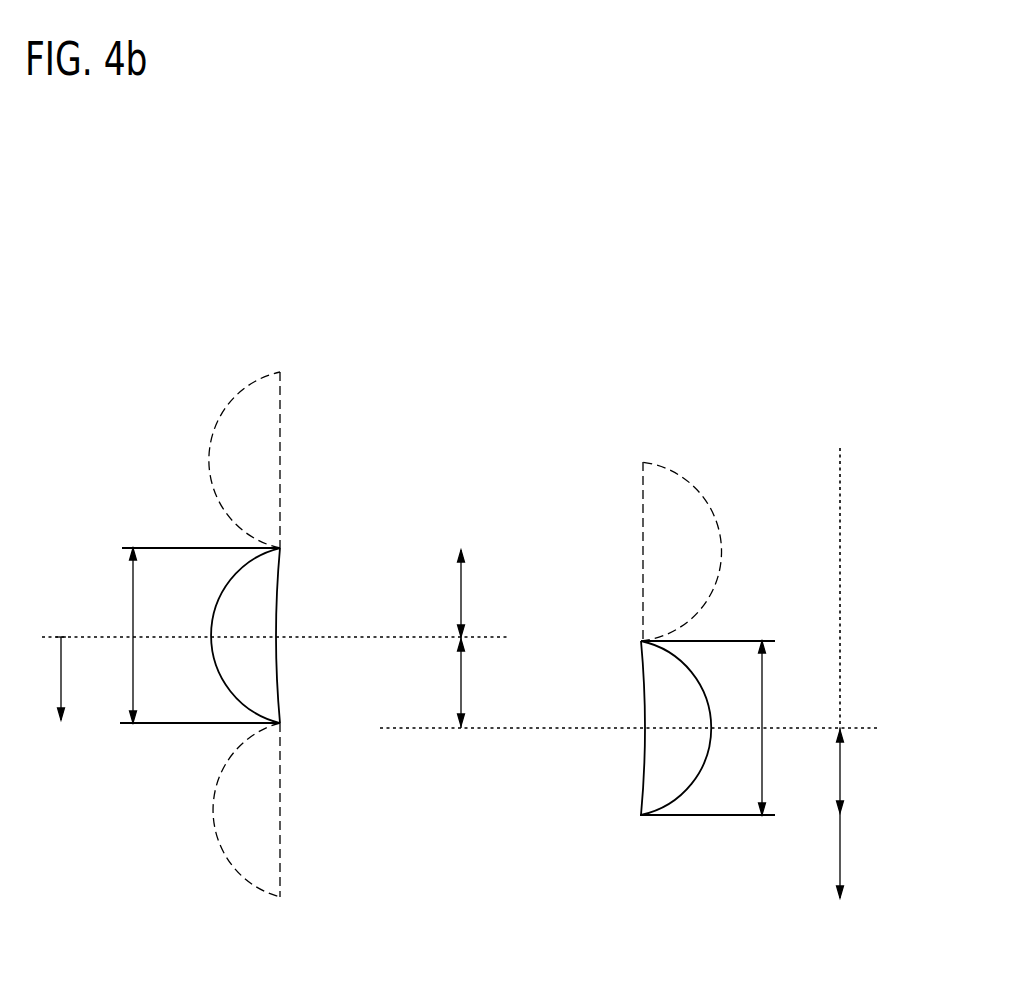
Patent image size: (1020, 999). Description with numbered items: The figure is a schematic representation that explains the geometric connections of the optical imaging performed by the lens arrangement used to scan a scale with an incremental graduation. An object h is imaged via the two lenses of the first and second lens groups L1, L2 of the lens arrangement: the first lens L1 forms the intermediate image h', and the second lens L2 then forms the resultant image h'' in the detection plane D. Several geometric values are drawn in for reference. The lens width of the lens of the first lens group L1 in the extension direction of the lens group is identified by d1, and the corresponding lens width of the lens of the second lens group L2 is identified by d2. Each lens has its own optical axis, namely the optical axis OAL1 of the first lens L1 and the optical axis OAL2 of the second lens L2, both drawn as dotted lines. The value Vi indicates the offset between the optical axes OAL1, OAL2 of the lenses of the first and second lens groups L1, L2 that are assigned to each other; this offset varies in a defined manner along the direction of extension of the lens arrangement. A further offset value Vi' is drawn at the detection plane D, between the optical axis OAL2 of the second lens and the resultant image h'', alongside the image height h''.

The first lens group L1 is at (266, 634).
The second lens group L2 is at (651, 601).
The detection plane D is at (809, 582).
The optical axis of first lens group OAL1 is at (274, 592).
The optical axis of second lens group OAL2 is at (630, 783).
The lens width of first lens group d1 is at (117, 635).
The lens width of second lens group d2 is at (780, 728).
The object h is at (53, 678).
The intermediate image h' is at (475, 593).
The resultant image h'' is at (865, 856).
The offset of the optical axes Vi is at (486, 682).
The axis offset at detector Vi' is at (865, 771).